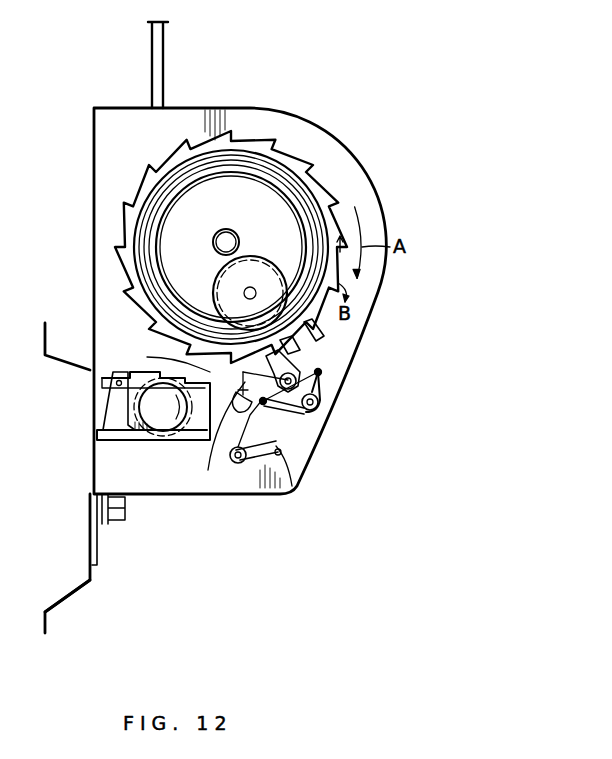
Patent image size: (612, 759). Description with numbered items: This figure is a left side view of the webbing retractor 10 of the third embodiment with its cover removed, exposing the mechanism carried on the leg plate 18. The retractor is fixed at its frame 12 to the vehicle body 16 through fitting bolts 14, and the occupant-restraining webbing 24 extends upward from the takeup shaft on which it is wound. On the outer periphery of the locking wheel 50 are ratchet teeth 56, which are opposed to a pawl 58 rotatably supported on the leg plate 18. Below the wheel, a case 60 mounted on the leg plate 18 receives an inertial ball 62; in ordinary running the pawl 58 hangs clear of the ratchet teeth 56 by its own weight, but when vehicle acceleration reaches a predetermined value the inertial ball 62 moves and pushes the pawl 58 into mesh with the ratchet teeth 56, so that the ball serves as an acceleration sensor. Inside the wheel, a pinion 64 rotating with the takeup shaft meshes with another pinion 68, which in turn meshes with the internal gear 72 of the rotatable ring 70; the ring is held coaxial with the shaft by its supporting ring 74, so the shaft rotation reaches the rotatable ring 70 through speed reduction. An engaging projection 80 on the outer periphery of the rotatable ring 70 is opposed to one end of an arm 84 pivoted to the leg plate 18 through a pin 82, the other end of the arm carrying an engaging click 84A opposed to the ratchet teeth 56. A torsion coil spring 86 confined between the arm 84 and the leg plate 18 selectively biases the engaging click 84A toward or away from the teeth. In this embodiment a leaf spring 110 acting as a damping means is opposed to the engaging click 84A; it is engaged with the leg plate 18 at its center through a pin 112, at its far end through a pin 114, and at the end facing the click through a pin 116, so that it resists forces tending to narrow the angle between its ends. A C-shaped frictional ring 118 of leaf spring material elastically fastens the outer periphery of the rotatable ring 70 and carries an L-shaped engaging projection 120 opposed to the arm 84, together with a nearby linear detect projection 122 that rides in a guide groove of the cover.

The webbing retractor 10 is at (366, 129).
The frame 12 is at (98, 562).
The fitting bolts 14 is at (126, 511).
The vehicle body 16 is at (73, 586).
The leg plate 18 is at (368, 300).
The occupant-restraining webbing 24 is at (165, 70).
The locking wheel 50 is at (292, 163).
The ratchet teeth 56 is at (258, 148).
The pawl 58 is at (160, 359).
The case 60 is at (118, 432).
The inertial ball 62 is at (163, 415).
The pinion 64 is at (220, 236).
The pinion 68 is at (218, 280).
The rotatable ring 70 is at (313, 195).
The internal gear 72 is at (220, 178).
The supporting ring 74 is at (175, 173).
The engaging projection 80 is at (313, 336).
The pin 82 is at (322, 378).
The arm 84 is at (312, 412).
The engaging click 84A is at (252, 412).
The torsion coil spring 86 is at (320, 401).
The leaf spring 110 is at (282, 453).
The pin 112 is at (236, 464).
The pin 114 is at (290, 476).
The pin 116 is at (230, 450).
The frictional ring 118 is at (297, 160).
The engaging projection 120 is at (343, 360).
The detect projection 122 is at (208, 440).